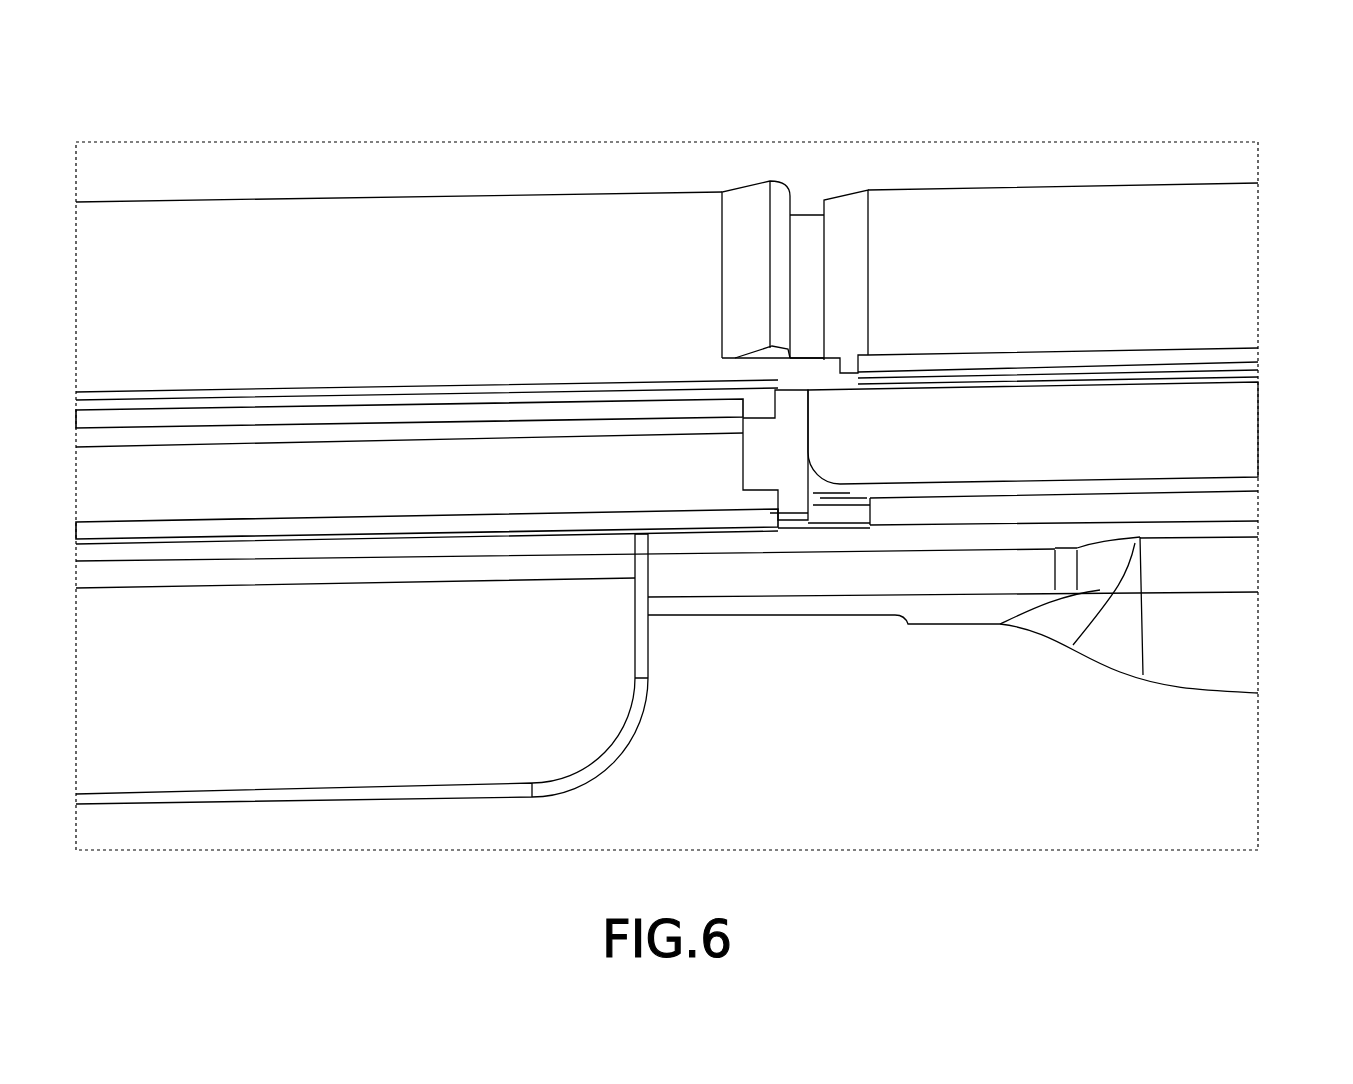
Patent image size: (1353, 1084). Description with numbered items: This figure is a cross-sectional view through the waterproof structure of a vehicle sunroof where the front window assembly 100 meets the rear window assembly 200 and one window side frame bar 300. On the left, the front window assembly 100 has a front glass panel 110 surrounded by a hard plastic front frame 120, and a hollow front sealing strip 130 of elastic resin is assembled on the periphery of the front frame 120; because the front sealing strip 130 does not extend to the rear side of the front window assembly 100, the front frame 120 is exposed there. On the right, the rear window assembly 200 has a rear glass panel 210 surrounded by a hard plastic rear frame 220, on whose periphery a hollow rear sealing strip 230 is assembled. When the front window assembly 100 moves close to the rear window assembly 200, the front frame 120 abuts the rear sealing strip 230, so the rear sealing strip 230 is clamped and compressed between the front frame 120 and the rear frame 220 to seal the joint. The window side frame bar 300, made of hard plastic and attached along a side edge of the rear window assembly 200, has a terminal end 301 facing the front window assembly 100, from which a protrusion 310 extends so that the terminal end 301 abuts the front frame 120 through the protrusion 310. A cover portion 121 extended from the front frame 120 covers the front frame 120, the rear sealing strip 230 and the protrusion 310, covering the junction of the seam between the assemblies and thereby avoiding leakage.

The front window assembly 100 is at (565, 422).
The front glass panel 110 is at (455, 213).
The front frame 120 is at (750, 200).
The cover portion 121 is at (808, 370).
The front sealing strip 130 is at (692, 521).
The rear window assembly 200 is at (953, 367).
The rear glass panel 210 is at (1087, 197).
The rear frame 220 is at (860, 185).
The rear sealing strip 230 is at (812, 233).
The window side frame bar 300 is at (1069, 389).
The terminal end 301 is at (930, 370).
The protrusion 310 is at (823, 408).